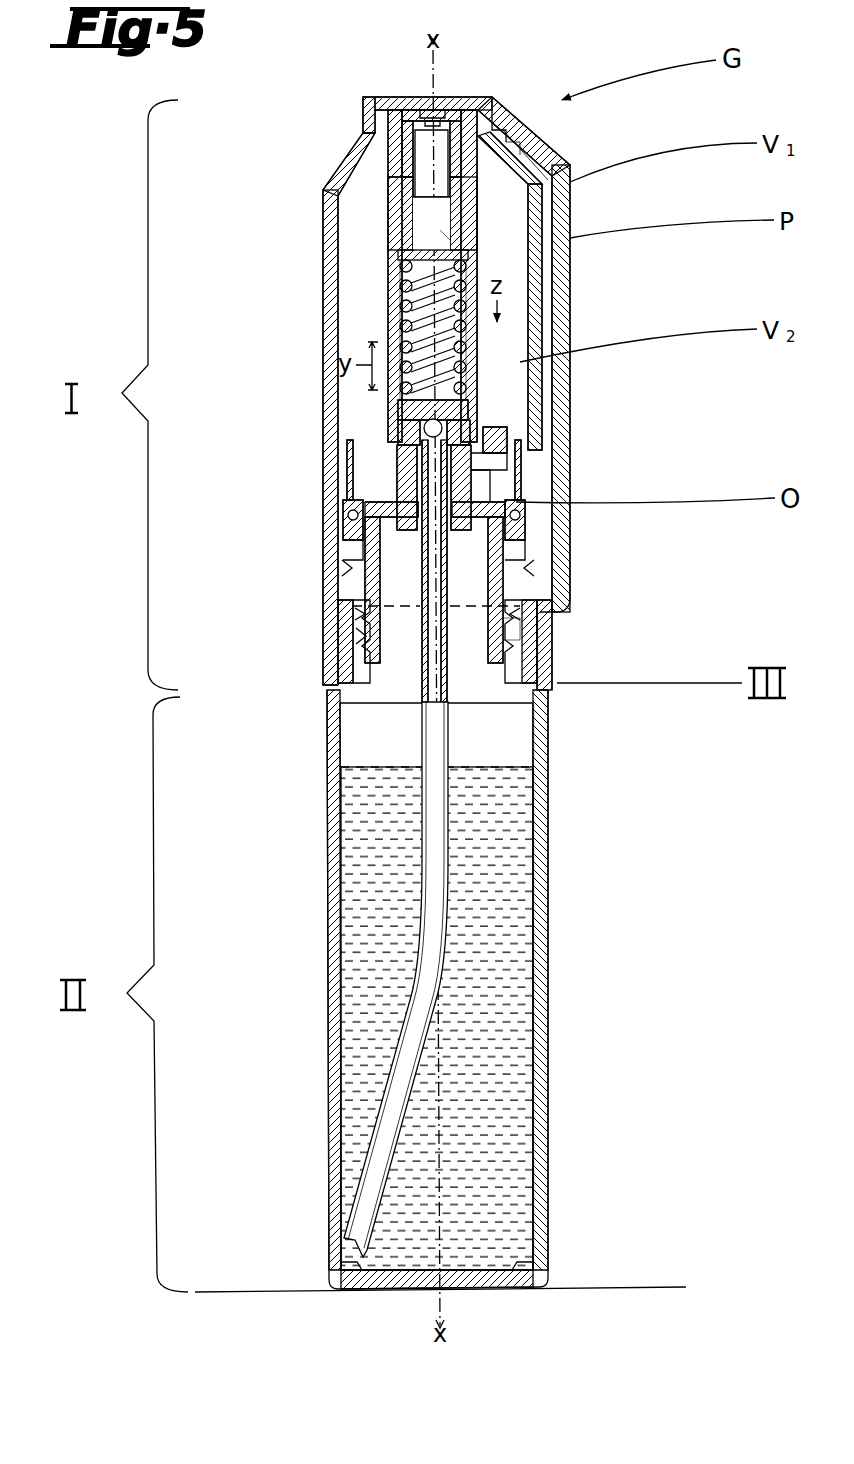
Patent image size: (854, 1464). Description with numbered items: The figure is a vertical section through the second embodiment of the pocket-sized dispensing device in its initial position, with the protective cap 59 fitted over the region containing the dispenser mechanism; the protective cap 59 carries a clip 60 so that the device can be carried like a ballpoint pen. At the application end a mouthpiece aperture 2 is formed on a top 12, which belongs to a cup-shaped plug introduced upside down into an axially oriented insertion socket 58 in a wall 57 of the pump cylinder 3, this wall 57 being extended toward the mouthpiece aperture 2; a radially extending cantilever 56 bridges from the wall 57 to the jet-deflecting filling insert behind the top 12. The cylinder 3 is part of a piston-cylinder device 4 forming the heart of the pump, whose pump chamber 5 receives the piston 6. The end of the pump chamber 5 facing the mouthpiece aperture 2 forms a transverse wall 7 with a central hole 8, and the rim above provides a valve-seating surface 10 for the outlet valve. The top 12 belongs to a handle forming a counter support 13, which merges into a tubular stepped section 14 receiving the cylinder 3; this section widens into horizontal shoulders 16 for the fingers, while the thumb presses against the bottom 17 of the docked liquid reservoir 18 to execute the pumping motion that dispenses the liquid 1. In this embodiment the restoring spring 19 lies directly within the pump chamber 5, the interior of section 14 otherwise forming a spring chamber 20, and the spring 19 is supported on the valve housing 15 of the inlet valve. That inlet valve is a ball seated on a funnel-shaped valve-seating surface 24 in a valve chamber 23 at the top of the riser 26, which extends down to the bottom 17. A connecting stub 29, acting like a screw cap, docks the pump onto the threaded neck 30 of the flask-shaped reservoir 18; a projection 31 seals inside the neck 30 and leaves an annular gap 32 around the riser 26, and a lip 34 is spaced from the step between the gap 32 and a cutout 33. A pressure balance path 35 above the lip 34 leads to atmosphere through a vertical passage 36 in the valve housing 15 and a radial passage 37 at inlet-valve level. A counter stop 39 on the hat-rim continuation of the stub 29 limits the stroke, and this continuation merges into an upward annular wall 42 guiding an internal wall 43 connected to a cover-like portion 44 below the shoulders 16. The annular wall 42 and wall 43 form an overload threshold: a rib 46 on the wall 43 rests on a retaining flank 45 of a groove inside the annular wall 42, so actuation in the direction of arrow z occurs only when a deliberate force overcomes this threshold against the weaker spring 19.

The liquid 1 is at (492, 846).
The mouthpiece aperture 2 is at (424, 113).
The cylinder 3 is at (392, 287).
The piston-cylinder device 4 is at (318, 271).
The pump chamber 5 is at (482, 262).
The piston 6 is at (570, 300).
The transverse wall 7 is at (512, 152).
The hole 8 is at (418, 232).
The valve-seating surface 10 is at (447, 239).
The top 12 is at (443, 113).
The counter support 13 is at (413, 408).
The tubular stepped section 14 is at (398, 256).
The valve housing 15 is at (405, 455).
The shoulders 16 is at (395, 399).
The bottom 17 is at (500, 1256).
The liquid reservoir 18 is at (550, 896).
The spring 19 is at (403, 312).
The spring chamber 20 is at (405, 345).
The valve chamber 23 is at (422, 438).
The valve-seating surface 24 is at (505, 420).
The riser 26 is at (452, 876).
The connecting stub 29 is at (520, 655).
The threaded neck 30 is at (505, 616).
The projection 31 is at (345, 665).
The annular gap 32 is at (498, 640).
The cutout 33 is at (404, 540).
The lip 34 is at (470, 540).
The pressure balance path 35 is at (480, 472).
The vertical passage 36 is at (490, 456).
The radial passage 37 is at (500, 442).
The counter stop 39 is at (352, 640).
The annular wall 42 is at (350, 610).
The internal wall 43 is at (345, 512).
The cover-like portion 44 is at (396, 428).
The retaining flank 45 is at (355, 580).
The rib 46 is at (350, 560).
The cantilever 56 is at (410, 176).
The wall 57 is at (413, 200).
The insertion socket 58 is at (430, 113).
The protective cap 59 is at (336, 190).
The clip 60 is at (528, 262).